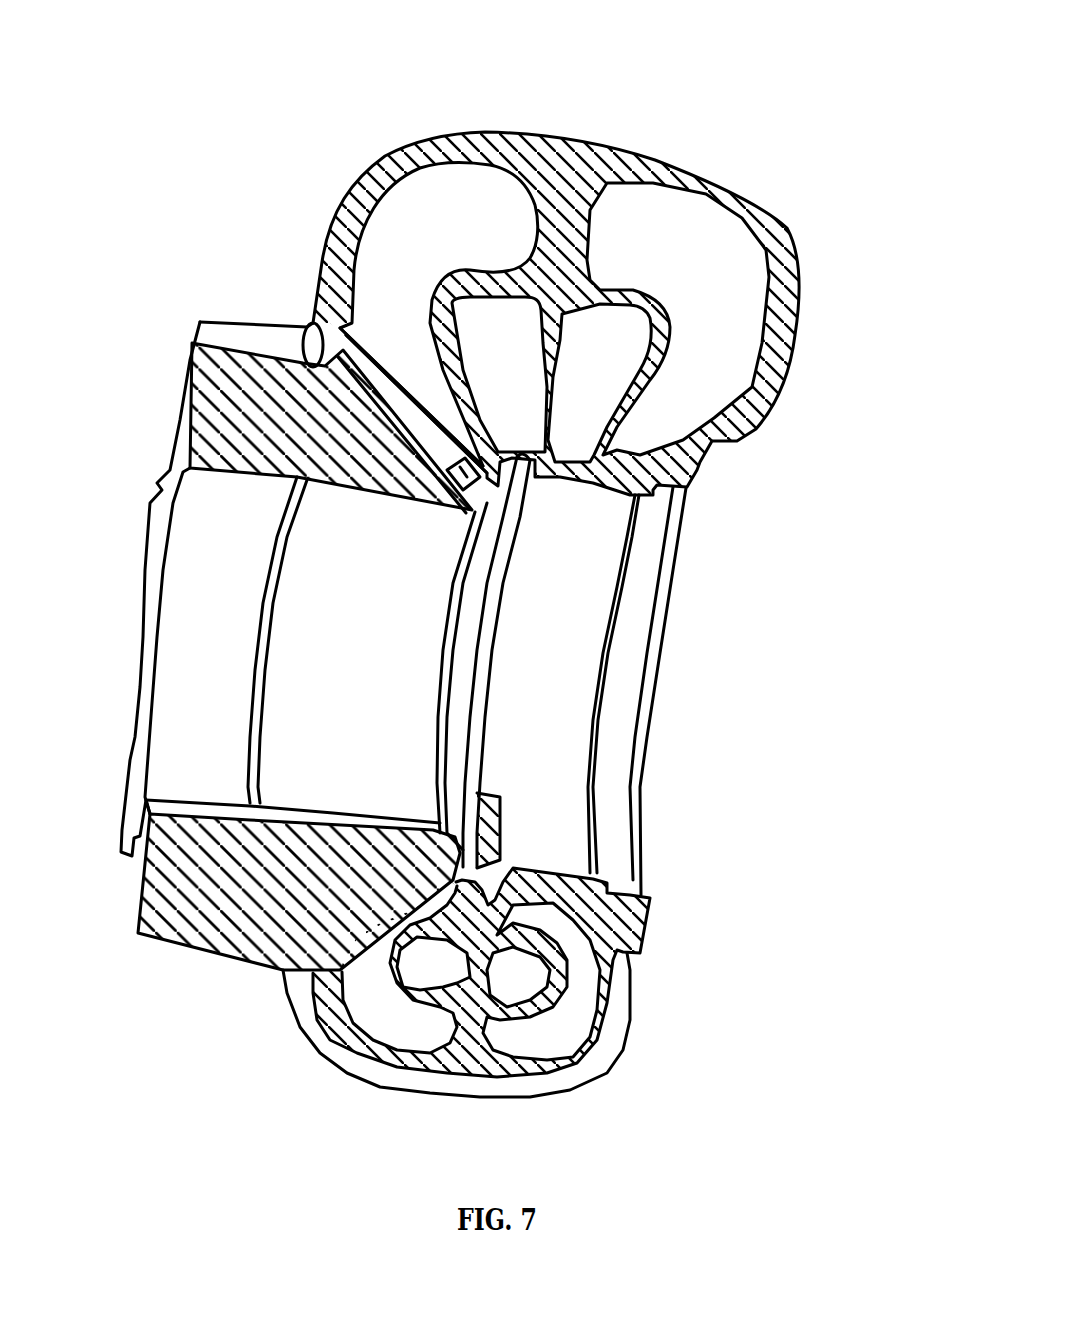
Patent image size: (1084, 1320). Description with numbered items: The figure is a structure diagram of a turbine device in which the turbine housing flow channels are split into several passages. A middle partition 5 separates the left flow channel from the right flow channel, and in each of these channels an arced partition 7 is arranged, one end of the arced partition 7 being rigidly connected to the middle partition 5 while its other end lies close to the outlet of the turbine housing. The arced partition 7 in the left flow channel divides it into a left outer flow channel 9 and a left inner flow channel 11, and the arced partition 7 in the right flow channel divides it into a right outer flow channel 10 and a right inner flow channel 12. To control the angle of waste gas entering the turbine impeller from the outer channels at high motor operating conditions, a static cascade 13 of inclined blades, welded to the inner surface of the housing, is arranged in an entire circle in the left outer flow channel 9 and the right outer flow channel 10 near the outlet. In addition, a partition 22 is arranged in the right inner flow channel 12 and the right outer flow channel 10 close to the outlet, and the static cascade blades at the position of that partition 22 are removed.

The middle partition 5 is at (578, 308).
The arced partition 7 is at (467, 412).
The left outer flow channel 9 is at (430, 217).
The right outer flow channel 10 is at (697, 267).
The left inner flow channel 11 is at (435, 950).
The right inner flow channel 12 is at (513, 957).
The static cascade 13 is at (307, 320).
The partition 22 is at (557, 542).